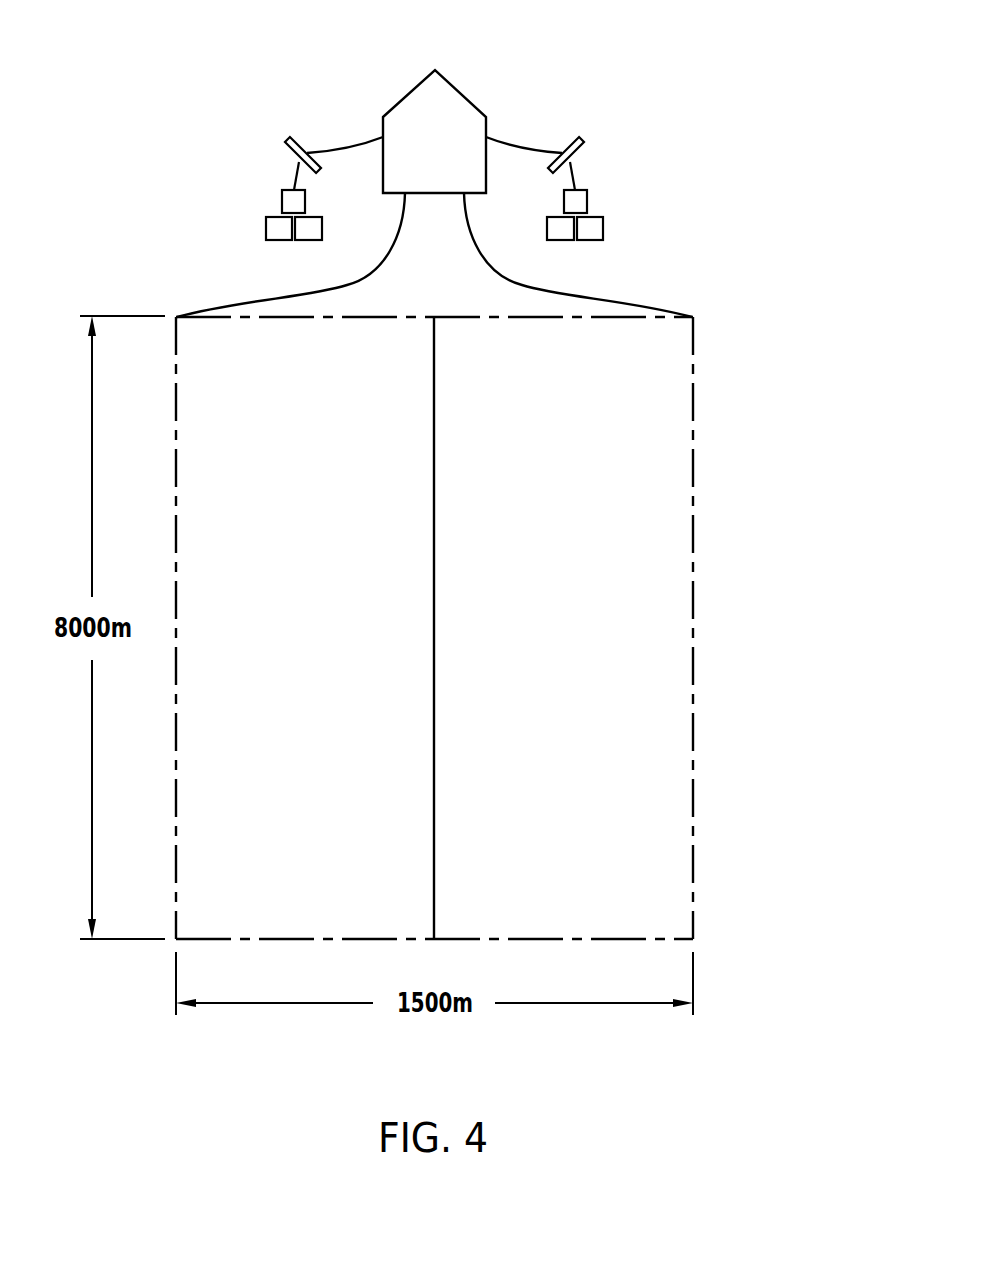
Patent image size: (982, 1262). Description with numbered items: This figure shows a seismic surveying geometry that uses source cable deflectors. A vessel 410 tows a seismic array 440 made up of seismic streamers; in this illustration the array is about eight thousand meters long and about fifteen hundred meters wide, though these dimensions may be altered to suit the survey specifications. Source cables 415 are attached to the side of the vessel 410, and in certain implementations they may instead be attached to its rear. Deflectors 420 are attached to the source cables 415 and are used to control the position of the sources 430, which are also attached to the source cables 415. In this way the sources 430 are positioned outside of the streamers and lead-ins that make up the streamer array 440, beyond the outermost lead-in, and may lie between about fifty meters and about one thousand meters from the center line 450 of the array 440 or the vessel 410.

The vessel 410 is at (450, 125).
The source cables 415 is at (350, 145).
The deflectors 420 is at (287, 152).
The sources 430 is at (278, 230).
The seismic array 440 is at (635, 433).
The center line 450 is at (434, 760).